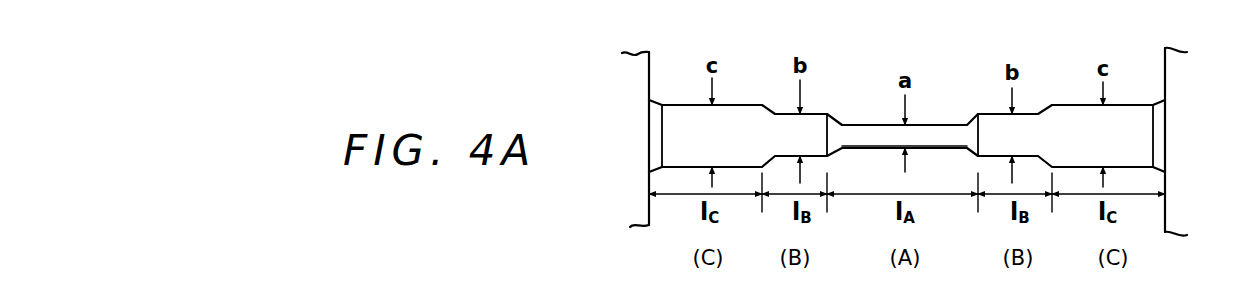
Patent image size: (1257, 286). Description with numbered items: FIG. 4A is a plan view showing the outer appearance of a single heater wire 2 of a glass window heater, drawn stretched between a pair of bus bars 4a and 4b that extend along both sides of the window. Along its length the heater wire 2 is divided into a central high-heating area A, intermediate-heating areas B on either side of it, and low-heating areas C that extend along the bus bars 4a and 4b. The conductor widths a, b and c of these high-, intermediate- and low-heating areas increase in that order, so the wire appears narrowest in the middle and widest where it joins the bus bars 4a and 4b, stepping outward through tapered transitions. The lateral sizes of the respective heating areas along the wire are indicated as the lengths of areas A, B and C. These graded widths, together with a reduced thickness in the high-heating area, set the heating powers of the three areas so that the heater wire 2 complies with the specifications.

The heater wire 2 is at (947, 118).
The bus bar 4a is at (643, 178).
The bus bar 4b is at (1177, 177).